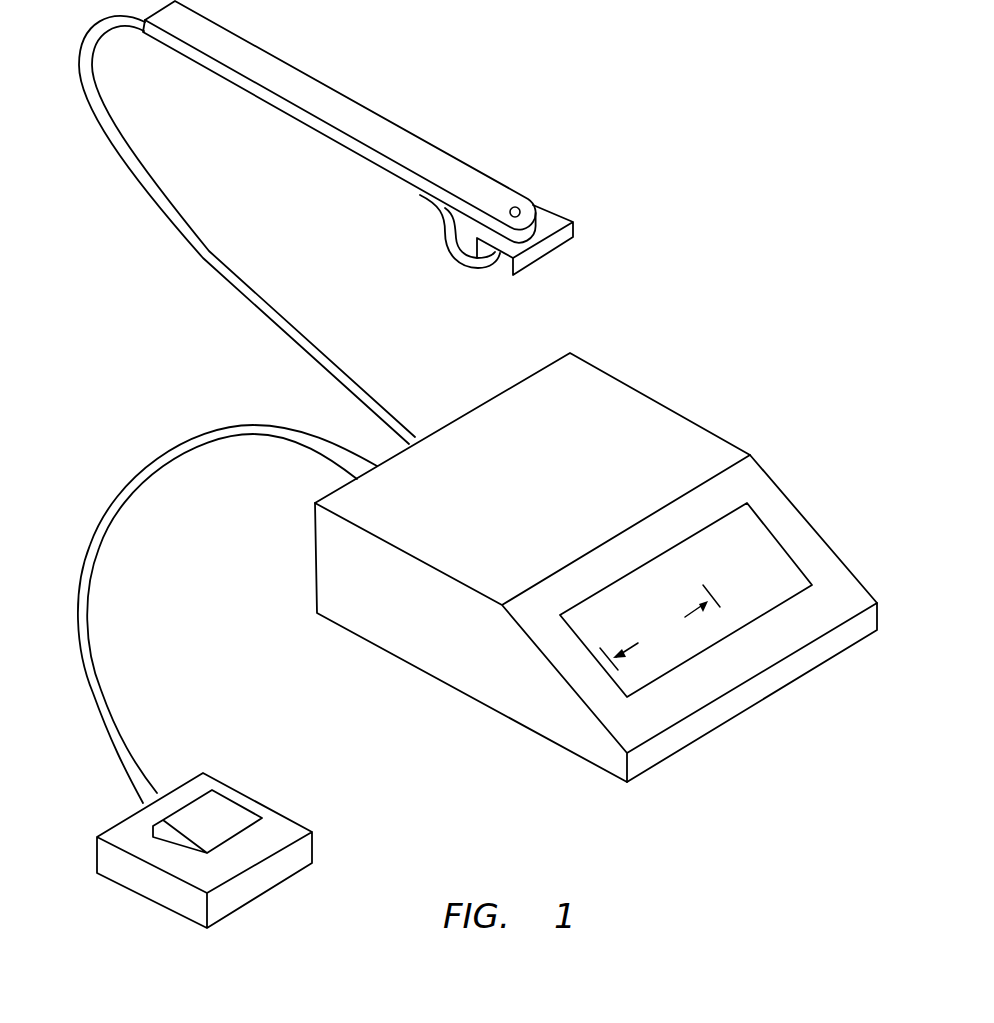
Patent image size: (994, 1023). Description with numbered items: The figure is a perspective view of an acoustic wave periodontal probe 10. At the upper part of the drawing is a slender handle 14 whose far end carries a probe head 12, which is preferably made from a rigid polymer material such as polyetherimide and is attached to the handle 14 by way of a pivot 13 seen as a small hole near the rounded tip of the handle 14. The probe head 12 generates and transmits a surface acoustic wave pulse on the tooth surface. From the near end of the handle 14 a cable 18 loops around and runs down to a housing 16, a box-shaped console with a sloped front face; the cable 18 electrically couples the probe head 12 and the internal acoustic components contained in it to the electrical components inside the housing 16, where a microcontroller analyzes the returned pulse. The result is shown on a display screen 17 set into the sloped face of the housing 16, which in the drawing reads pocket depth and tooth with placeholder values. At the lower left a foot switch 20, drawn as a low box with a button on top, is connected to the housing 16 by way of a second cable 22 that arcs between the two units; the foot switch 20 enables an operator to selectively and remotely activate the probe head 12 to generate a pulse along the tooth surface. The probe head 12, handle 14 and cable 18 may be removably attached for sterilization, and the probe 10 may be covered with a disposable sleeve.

The acoustic wave periodontal probe 10 is at (592, 84).
The probe head 12 is at (556, 220).
The pivot 13 is at (522, 207).
The handle 14 is at (393, 131).
The housing 16 is at (672, 428).
The display screen 17 is at (740, 528).
The cable 18 is at (311, 358).
The foot switch 20 is at (287, 830).
The cable 22 is at (88, 593).